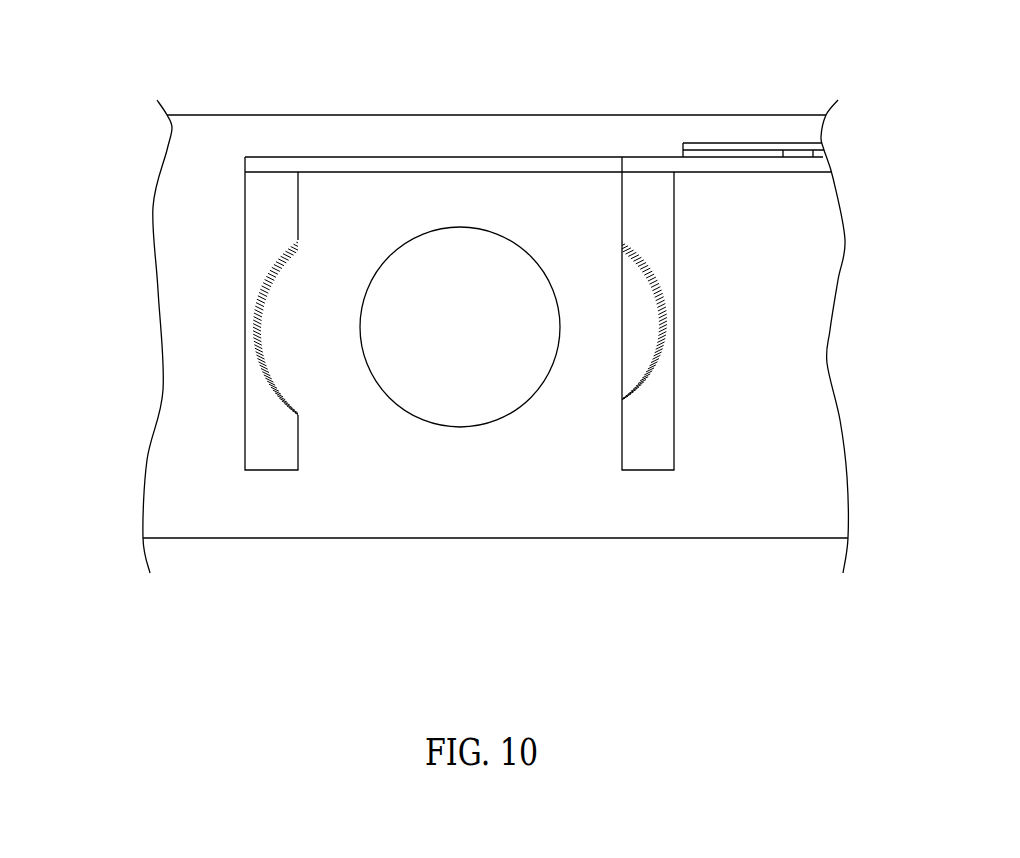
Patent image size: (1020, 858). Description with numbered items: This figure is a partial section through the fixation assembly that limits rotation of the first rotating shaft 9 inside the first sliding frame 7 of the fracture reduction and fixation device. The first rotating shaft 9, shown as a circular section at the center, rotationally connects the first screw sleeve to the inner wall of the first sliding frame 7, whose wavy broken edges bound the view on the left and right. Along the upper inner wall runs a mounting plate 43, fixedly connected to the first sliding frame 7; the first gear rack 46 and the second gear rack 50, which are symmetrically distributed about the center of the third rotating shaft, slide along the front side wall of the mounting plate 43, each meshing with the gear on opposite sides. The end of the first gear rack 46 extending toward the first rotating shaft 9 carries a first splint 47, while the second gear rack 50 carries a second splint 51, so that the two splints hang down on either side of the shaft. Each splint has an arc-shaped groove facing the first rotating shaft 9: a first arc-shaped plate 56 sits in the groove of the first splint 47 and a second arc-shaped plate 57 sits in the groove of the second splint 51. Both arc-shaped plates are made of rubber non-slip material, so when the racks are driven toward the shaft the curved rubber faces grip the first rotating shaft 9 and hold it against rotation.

The first sliding frame 7 is at (193, 272).
The first rotating shaft 9 is at (467, 332).
The mounting plate 43 is at (760, 130).
The first gear rack 46 is at (360, 167).
The first splint 47 is at (257, 210).
The second gear rack 50 is at (660, 167).
The second splint 51 is at (652, 227).
The first arc-shaped plate 56 is at (250, 336).
The second arc-shaped plate 57 is at (655, 345).